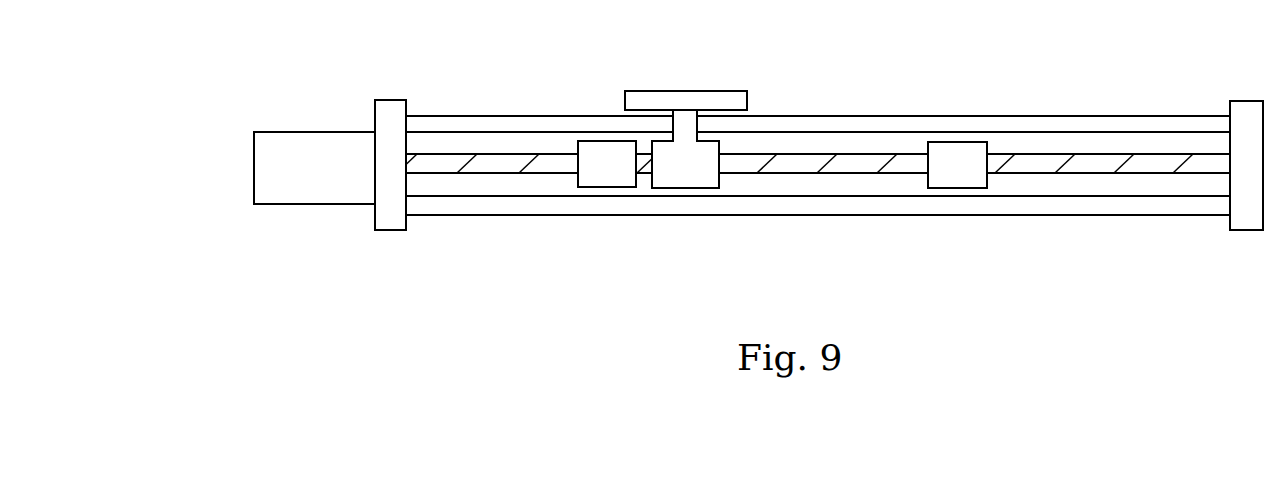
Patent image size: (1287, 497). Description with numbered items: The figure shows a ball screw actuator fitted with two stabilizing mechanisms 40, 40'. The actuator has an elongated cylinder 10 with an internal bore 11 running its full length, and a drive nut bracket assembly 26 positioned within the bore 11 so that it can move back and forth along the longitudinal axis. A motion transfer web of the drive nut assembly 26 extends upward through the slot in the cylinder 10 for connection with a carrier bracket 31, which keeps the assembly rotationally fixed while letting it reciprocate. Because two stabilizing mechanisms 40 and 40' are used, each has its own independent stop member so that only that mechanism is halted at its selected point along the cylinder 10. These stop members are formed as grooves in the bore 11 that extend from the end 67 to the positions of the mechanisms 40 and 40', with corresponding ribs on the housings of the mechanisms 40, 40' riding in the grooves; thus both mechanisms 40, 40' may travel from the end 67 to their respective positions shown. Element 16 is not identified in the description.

The cylinder 10 is at (990, 63).
The internal bore 11 is at (504, 126).
The hatched layer 16 is at (456, 165).
The drive nut bracket assembly 26 is at (703, 180).
The carrier bracket 31 is at (703, 90).
The stabilizing mechanism 40 is at (602, 124).
The stabilizing mechanism 40' is at (949, 124).
The end 67 is at (395, 110).